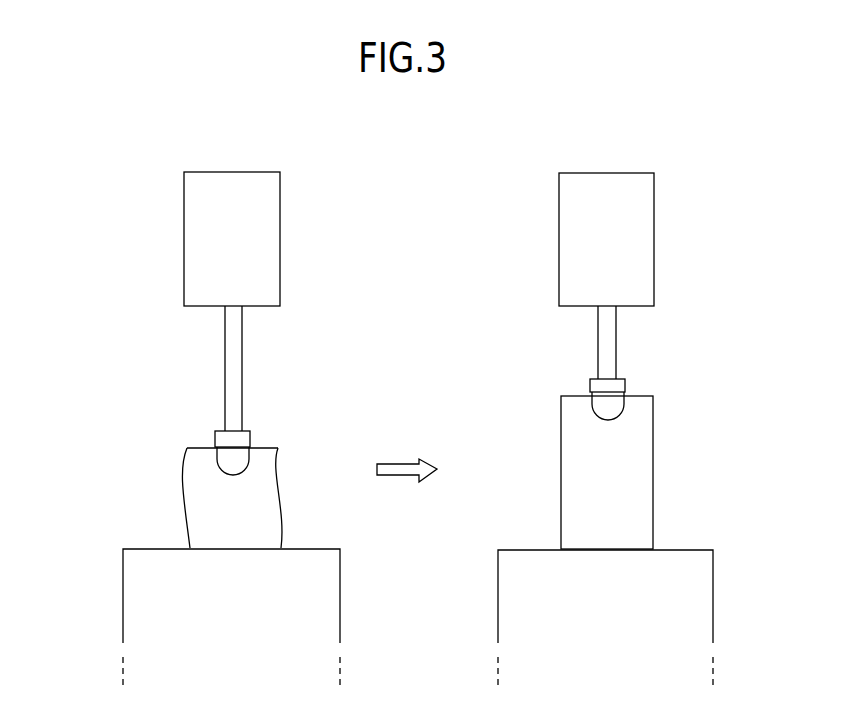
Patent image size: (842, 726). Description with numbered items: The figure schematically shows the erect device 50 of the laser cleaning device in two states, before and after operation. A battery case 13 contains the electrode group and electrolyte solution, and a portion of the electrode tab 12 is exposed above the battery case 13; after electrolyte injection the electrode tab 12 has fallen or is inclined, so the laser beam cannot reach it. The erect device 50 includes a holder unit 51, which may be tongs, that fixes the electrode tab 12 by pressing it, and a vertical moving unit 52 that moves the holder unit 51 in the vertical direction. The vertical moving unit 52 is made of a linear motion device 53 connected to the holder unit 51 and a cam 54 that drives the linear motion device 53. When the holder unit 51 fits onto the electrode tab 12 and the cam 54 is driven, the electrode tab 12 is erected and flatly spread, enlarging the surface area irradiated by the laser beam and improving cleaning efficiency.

The electrode tab 12 is at (199, 498).
The battery case 13 is at (139, 608).
The erect device 50 is at (421, 323).
The holder unit 51 is at (224, 459).
The vertical moving unit 52 is at (421, 301).
The linear motion device 53 is at (233, 333).
The cam 54 is at (202, 267).